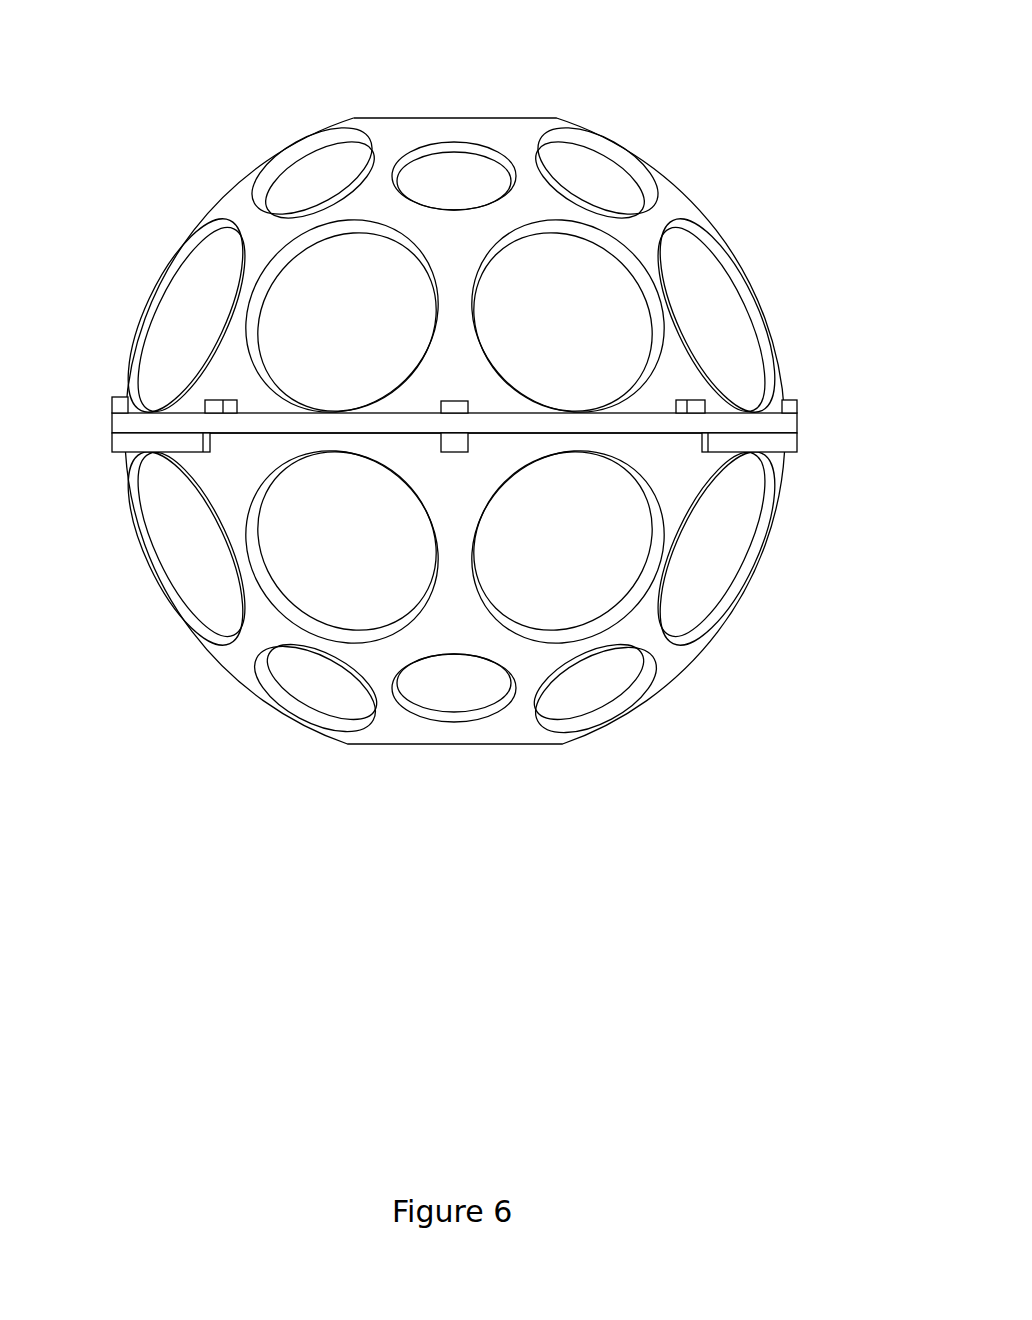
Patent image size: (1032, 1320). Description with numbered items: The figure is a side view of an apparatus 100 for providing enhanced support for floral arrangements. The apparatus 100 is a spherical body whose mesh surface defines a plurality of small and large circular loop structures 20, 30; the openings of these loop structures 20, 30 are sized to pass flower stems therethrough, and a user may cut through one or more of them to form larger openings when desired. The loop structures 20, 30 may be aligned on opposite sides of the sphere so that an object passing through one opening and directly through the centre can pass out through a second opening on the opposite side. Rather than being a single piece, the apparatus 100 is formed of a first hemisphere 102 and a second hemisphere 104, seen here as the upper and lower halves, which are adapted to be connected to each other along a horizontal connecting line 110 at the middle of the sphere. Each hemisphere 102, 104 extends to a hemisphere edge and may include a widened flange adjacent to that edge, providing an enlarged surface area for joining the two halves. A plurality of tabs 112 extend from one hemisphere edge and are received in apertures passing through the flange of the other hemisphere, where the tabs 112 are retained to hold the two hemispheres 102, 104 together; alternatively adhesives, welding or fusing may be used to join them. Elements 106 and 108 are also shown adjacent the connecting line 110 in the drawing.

The apparatus 100 is at (624, 72).
The small circular loop structure 20 is at (288, 158).
The large circular loop structure 30 is at (155, 300).
The first hemisphere 102 is at (690, 193).
The second hemisphere 104 is at (667, 688).
The upper band plate 106 is at (798, 413).
The lower band plate 108 is at (798, 452).
The connecting line 110 is at (822, 432).
The tab 112 is at (212, 399).